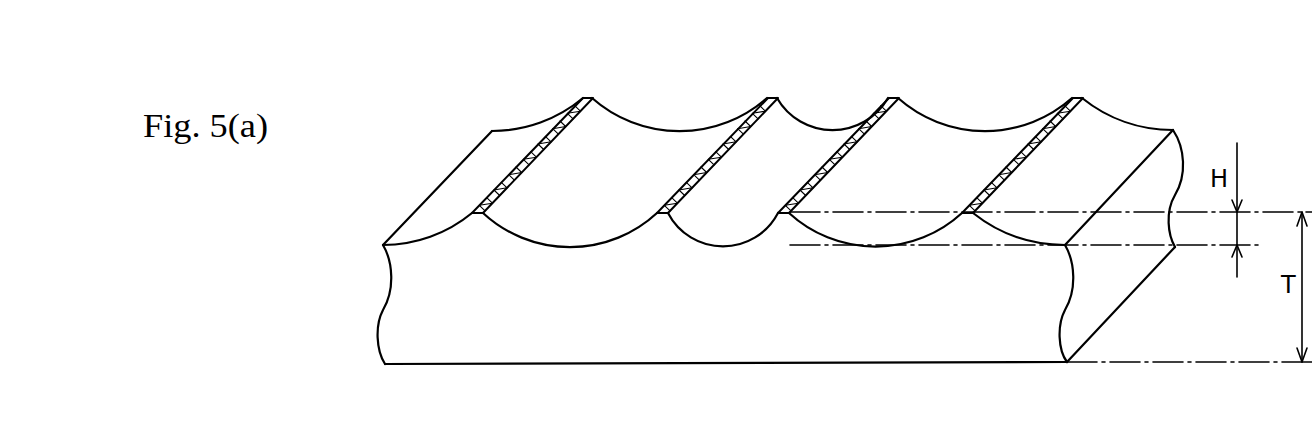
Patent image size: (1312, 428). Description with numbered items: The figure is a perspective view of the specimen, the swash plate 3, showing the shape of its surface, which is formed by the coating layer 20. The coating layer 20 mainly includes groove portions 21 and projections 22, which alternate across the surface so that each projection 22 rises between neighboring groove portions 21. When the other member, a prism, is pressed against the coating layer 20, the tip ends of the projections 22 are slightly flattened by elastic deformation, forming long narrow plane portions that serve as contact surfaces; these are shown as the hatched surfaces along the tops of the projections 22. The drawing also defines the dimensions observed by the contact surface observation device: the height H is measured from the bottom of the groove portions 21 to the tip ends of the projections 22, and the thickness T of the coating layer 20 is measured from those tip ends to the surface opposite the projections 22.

The coating layer 20 is at (727, 247).
The swash plate 3 is at (345, 293).
The groove portions 21 is at (503, 143).
The projections 22 is at (572, 105).